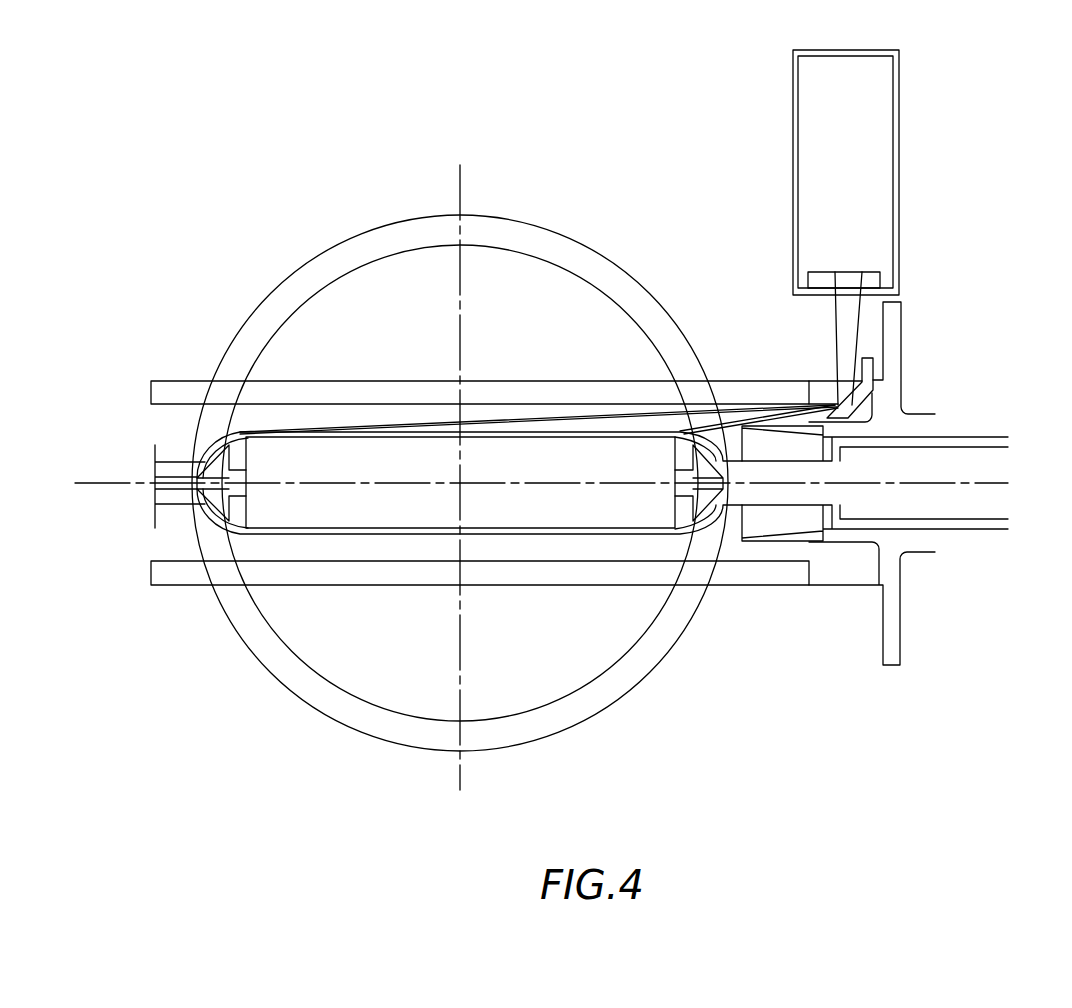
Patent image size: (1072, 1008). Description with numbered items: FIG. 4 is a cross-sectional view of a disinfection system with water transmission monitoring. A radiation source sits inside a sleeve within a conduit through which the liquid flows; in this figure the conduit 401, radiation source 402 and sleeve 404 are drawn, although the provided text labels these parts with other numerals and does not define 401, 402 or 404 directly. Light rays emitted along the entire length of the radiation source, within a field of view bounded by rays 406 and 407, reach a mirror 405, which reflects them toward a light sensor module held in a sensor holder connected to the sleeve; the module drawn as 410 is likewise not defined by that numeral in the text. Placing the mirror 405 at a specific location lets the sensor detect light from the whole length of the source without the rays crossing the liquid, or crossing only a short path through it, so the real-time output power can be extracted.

The housing 401 is at (412, 632).
The tube 402 is at (558, 505).
The plate 404 is at (608, 392).
The mirror 405 is at (857, 395).
The ray 406 is at (515, 417).
The ray 407 is at (722, 432).
The control box 410 is at (900, 172).